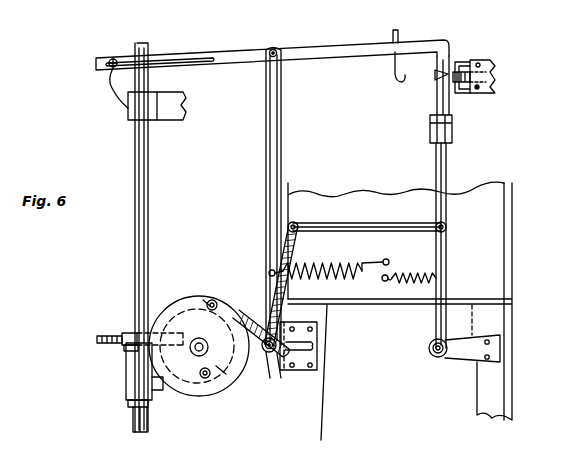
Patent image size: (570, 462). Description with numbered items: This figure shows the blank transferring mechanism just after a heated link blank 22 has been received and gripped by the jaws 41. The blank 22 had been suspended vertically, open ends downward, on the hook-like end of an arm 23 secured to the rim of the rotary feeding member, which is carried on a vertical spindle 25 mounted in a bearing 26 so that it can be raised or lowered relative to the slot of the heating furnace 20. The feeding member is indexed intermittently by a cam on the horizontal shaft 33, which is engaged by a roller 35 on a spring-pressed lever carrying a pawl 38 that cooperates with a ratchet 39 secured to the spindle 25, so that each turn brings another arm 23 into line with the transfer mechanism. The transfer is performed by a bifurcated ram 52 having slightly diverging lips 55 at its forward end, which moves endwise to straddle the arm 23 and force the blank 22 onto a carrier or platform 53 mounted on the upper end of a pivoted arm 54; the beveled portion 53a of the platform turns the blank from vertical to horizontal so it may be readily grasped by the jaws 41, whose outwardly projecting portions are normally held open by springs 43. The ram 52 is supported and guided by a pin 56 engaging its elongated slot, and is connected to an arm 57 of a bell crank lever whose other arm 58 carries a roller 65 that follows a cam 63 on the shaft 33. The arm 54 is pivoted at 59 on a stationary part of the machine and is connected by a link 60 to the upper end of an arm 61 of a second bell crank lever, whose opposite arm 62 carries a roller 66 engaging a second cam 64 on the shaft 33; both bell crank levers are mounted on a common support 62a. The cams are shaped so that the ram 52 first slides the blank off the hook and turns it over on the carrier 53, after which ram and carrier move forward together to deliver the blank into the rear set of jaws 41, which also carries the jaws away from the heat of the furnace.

The heating furnace 20 is at (504, 243).
The blank 22 is at (452, 72).
The arm 23 is at (393, 64).
The vertical spindle 25 is at (149, 237).
The bearing 26 is at (134, 108).
The horizontal shaft 33 is at (198, 357).
The roller 35 is at (124, 348).
The pawl 38 is at (130, 332).
The ratchet 39 is at (100, 336).
The jaws 41 is at (462, 94).
The spring 43 is at (470, 62).
The ram 52 is at (343, 50).
The carrier 53 is at (437, 97).
The beveled portion 53a is at (435, 78).
The pivoted arm 54 is at (441, 252).
The lips 55 is at (182, 62).
The pin 56 is at (113, 58).
The arm 57 is at (266, 150).
The arm 58 is at (266, 352).
The pivot 59 is at (430, 353).
The link 60 is at (355, 225).
The arm 61 is at (298, 252).
The arm 62 is at (250, 317).
The common support 62a is at (276, 360).
The cam 63 is at (227, 379).
The cam 64 is at (203, 300).
The roller 65 is at (208, 379).
The roller 66 is at (214, 300).